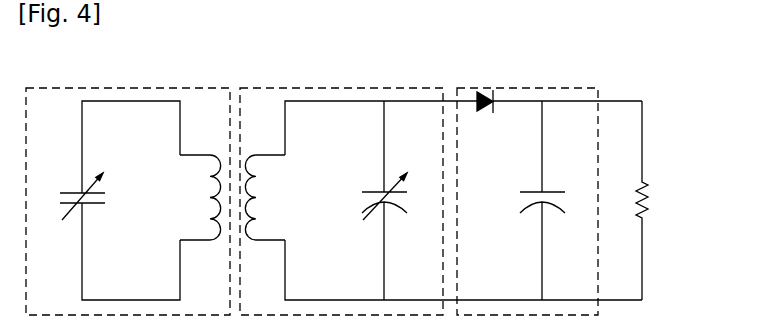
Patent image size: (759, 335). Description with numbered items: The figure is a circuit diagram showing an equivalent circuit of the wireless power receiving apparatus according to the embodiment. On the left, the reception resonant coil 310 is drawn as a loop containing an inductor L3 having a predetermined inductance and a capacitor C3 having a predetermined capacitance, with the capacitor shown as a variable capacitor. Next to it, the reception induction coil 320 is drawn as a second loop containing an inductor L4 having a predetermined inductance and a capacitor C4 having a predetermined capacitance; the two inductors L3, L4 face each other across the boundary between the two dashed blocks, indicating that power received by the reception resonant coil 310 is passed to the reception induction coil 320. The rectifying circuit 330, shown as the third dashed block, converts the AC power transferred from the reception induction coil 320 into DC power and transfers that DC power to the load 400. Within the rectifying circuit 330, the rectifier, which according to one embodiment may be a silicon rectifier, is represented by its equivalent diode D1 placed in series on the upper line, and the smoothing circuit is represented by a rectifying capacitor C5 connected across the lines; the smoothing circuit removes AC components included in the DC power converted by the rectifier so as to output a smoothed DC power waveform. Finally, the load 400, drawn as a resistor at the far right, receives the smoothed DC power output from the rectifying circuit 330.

The reception resonant coil 310 is at (153, 86).
The reception induction coil 320 is at (362, 86).
The rectifying circuit 330 is at (544, 86).
The load 400 is at (658, 183).
The capacitor C3 is at (69, 196).
The inductor L3 is at (200, 197).
The inductor L4 is at (268, 197).
The capacitor C4 is at (398, 200).
The diode D1 is at (558, 88).
The rectifying capacitor C5 is at (556, 200).